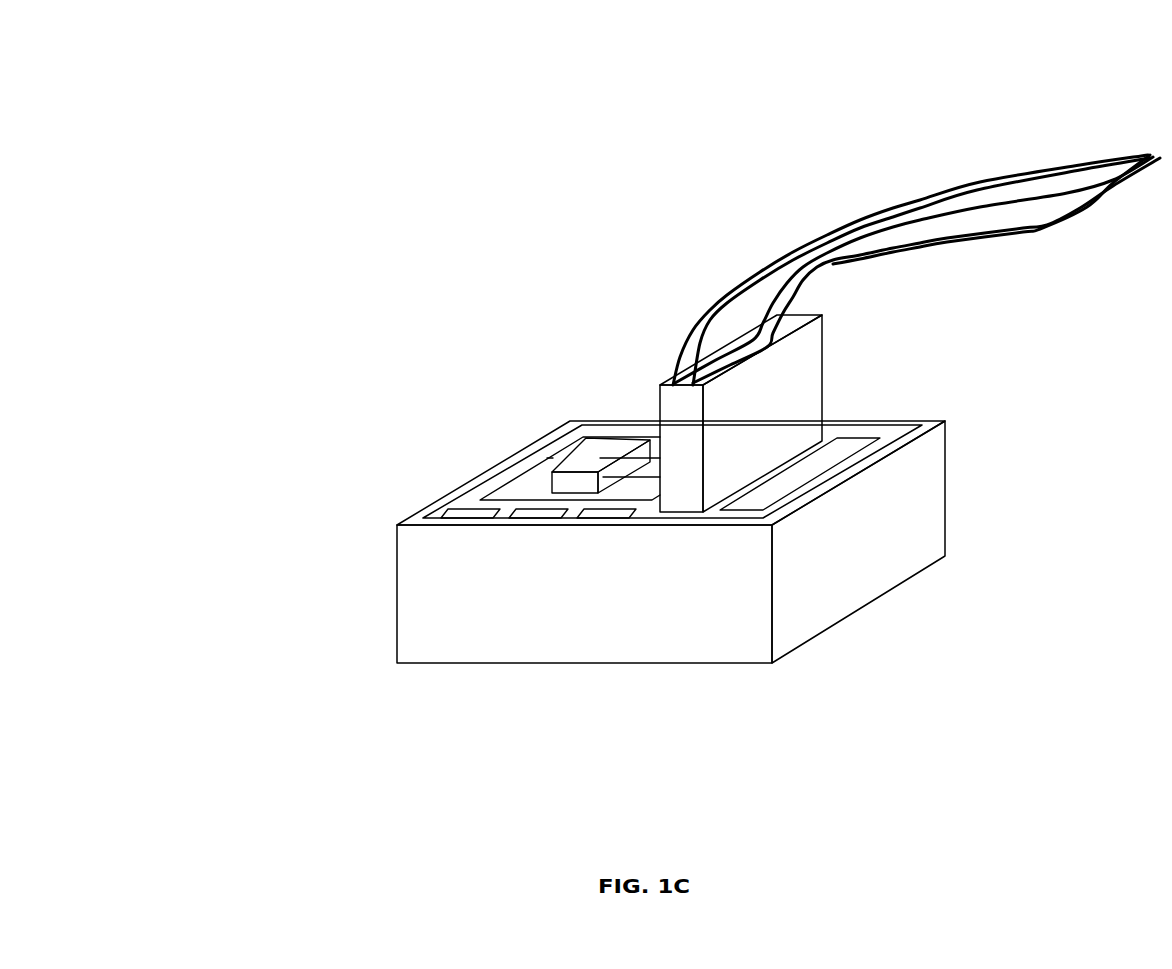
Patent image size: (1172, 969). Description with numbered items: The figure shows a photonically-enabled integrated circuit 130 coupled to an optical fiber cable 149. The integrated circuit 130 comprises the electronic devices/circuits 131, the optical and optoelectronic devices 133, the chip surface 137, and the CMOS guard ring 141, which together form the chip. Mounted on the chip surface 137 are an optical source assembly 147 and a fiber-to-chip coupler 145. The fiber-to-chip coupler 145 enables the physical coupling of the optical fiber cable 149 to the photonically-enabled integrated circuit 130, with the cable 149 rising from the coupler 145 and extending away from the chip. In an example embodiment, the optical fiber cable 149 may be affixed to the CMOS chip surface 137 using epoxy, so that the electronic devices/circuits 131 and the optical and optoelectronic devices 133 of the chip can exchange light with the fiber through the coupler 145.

The photonically-enabled integrated circuit 130 is at (250, 98).
The electronic devices/circuits 131 is at (593, 517).
The optical and optoelectronic devices 133 is at (547, 498).
The chip surface 137 is at (528, 472).
The CMOS guard ring 141 is at (934, 423).
The fiber-to-chip coupler 145 is at (782, 423).
The optical source assembly 147 is at (611, 448).
The optical fiber cable 149 is at (975, 183).